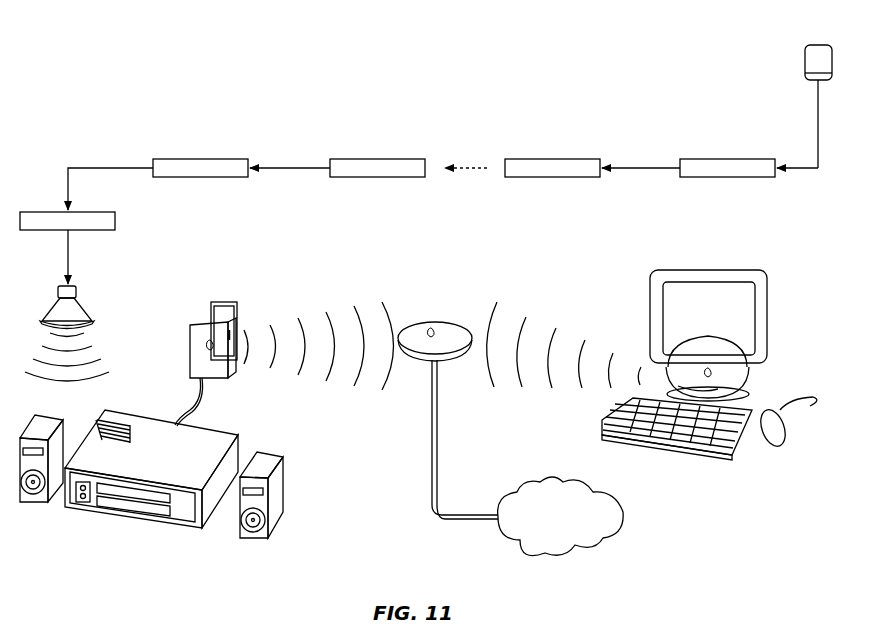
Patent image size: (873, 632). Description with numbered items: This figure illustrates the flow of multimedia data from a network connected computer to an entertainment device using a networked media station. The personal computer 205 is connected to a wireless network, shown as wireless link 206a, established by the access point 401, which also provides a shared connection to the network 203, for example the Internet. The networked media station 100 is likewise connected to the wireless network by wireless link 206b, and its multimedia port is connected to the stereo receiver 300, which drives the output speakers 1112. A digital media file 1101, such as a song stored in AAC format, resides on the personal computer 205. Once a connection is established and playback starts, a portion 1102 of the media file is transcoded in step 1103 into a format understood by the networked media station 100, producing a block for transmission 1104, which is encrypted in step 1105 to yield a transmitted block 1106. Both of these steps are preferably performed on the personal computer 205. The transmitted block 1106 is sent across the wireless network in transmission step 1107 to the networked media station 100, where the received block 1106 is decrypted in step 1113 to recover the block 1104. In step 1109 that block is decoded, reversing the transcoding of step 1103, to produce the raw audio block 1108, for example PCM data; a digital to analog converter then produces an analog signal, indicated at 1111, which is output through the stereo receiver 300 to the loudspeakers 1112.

The digital media file 1101 is at (818, 43).
The portion of the media file 1102 is at (807, 77).
The transcoding step 1103 is at (817, 117).
The block for transmission 1104 is at (728, 157).
The encryption step 1105 is at (642, 170).
The transmitted block 1106 is at (550, 158).
The transmission step 1107 is at (470, 167).
The raw audio block 1108 is at (116, 218).
The decoding step 1109 is at (98, 165).
The output signal path 1111 is at (68, 258).
The output speakers 1112 is at (78, 300).
The decryption step 1113 is at (290, 170).
The networked media station 100 is at (207, 325).
The stereo receiver 300 is at (220, 430).
The wireless network 206a is at (525, 323).
The wireless network 206b is at (358, 317).
The access point 401 is at (435, 322).
The network 203 is at (625, 518).
The personal computer 205 is at (768, 328).